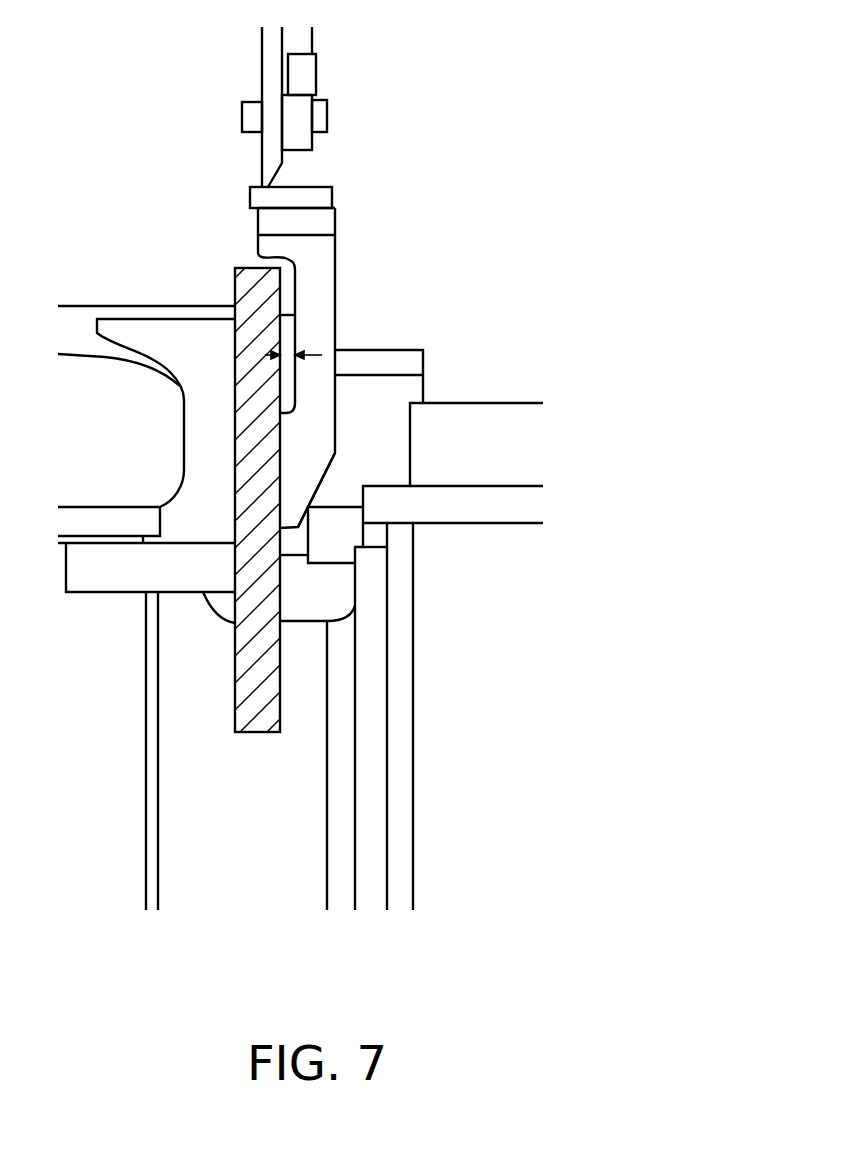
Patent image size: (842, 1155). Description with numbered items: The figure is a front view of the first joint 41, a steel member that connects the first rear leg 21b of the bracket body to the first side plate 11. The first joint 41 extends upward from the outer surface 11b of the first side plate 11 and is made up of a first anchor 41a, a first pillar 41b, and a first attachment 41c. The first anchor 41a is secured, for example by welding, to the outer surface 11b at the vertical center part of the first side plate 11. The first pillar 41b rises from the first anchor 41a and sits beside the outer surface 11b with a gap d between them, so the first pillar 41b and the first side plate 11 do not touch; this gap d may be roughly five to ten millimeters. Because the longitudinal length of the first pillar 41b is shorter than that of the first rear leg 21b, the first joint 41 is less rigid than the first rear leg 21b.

The first rear leg 21b is at (327, 68).
The first joint 41 is at (350, 262).
The first anchor 41a is at (308, 472).
The first pillar 41b is at (323, 318).
The first attachment 41c is at (312, 220).
The first side plate 11 is at (287, 598).
The outer surface 11b is at (280, 545).
The gap d is at (282, 343).